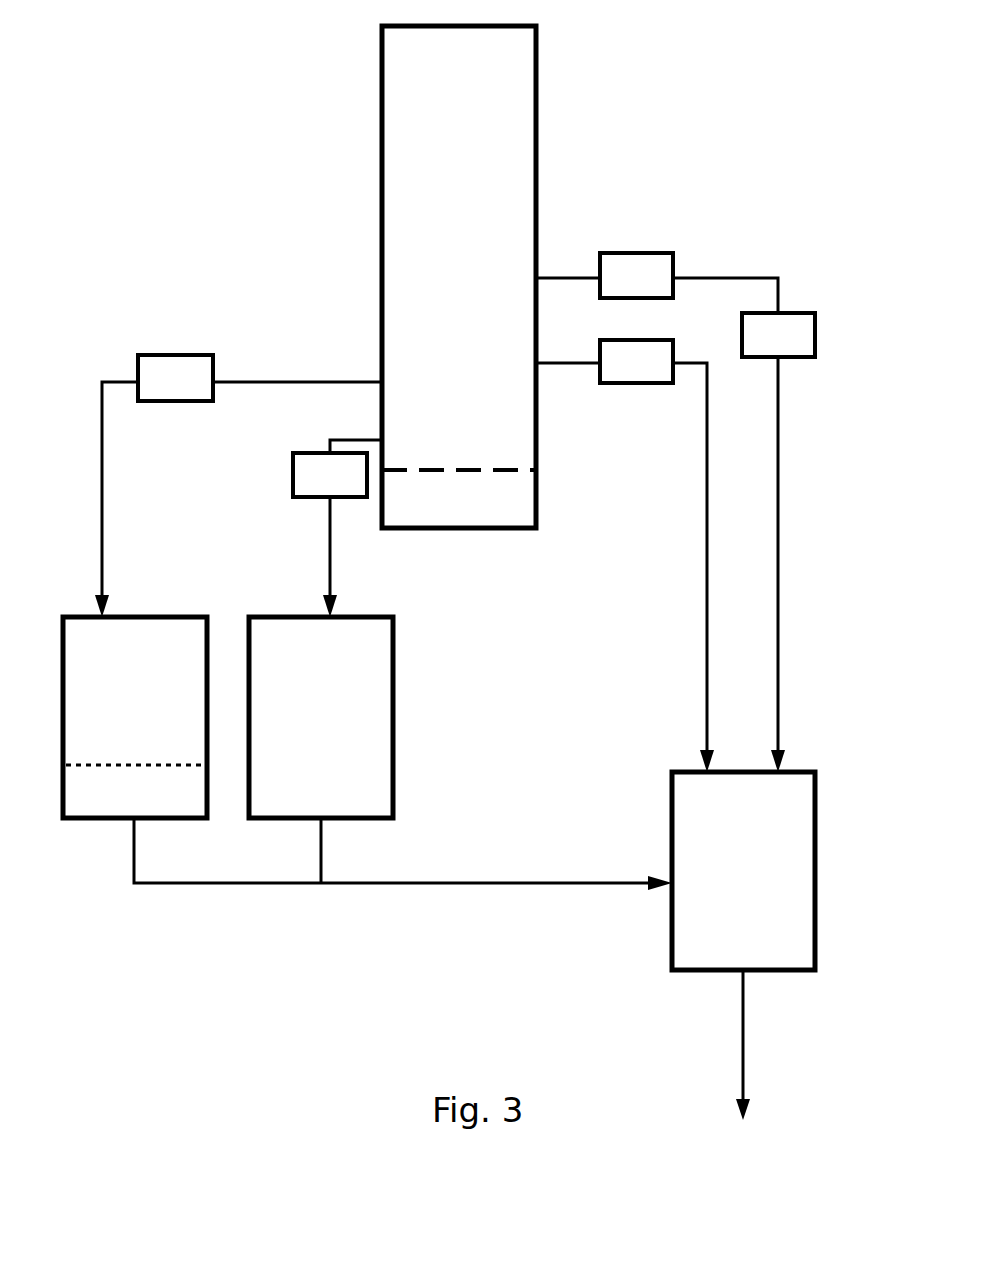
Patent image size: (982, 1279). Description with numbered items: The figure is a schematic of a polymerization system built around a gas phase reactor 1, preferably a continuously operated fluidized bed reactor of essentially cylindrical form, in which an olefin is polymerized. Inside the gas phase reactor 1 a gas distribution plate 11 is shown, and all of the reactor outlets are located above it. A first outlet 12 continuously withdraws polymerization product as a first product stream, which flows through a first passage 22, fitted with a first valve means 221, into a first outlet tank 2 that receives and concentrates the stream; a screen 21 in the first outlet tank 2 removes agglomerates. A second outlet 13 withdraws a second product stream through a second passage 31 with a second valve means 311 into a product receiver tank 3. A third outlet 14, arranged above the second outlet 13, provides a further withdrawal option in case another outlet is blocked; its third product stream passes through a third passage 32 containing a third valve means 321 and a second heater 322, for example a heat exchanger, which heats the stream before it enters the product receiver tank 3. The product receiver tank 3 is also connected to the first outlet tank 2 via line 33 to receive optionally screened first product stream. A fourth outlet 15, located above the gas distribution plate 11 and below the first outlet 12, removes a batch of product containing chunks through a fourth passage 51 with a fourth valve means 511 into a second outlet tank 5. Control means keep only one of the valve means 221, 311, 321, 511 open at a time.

The gas phase reactor 1 is at (450, 292).
The gas distribution plate 11 is at (470, 468).
The first outlet 12 is at (379, 370).
The second outlet 13 is at (551, 369).
The third outlet 14 is at (548, 261).
The fourth outlet 15 is at (377, 437).
The first outlet tank 2 is at (124, 730).
The screen 21 is at (106, 765).
The first passage 22 is at (100, 427).
The first valve means 221 is at (150, 391).
The product receiver tank 3 is at (734, 884).
The second passage 31 is at (705, 560).
The second valve means 311 is at (661, 375).
The third passage 32 is at (780, 440).
The third valve means 321 is at (661, 289).
The second heater 322 is at (803, 348).
The line 33 is at (578, 883).
The second outlet tank 5 is at (311, 730).
The fourth passage 51 is at (328, 552).
The fourth valve means 511 is at (305, 488).